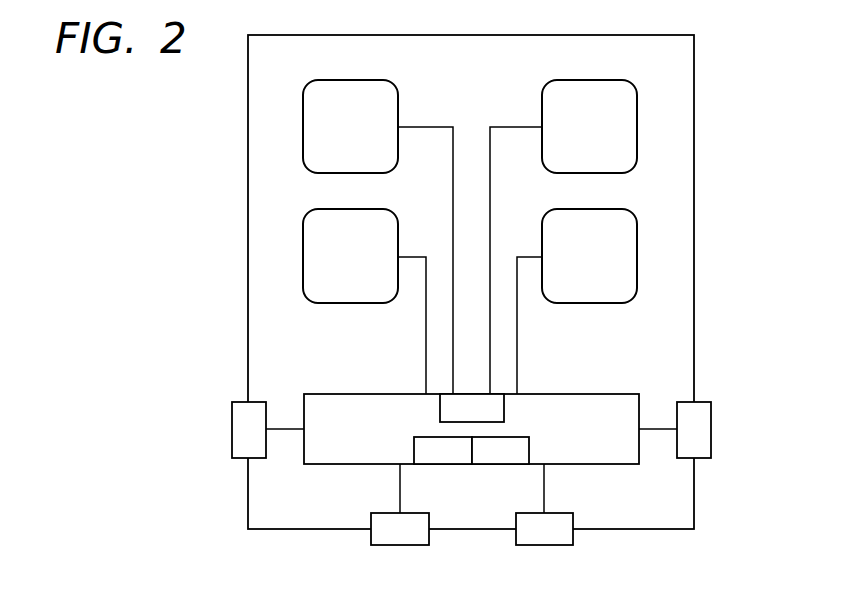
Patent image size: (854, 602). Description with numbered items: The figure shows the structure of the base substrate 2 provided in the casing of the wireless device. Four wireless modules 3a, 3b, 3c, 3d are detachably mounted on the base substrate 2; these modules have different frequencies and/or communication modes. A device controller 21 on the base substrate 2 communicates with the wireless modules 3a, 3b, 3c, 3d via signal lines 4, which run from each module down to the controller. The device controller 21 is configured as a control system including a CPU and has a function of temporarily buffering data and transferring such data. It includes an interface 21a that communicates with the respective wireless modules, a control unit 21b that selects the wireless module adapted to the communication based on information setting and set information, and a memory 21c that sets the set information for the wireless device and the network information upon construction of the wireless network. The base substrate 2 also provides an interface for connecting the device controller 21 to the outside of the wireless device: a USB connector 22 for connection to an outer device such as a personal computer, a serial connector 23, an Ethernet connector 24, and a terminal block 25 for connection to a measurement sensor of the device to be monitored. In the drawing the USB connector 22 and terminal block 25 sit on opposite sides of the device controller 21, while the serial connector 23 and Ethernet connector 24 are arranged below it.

The base substrate 2 is at (665, 61).
The wireless module 3a is at (320, 106).
The wireless module 3b is at (322, 236).
The wireless module 3c is at (623, 105).
The wireless module 3d is at (623, 230).
The signal lines 4 is at (518, 343).
The device controller 21 is at (367, 393).
The interface 21a is at (506, 408).
The control unit 21b is at (414, 449).
The memory 21c is at (531, 450).
The USB connector 22 is at (712, 428).
The serial connector 23 is at (400, 546).
The Ethernet connector 24 is at (545, 546).
The terminal block 25 is at (232, 429).